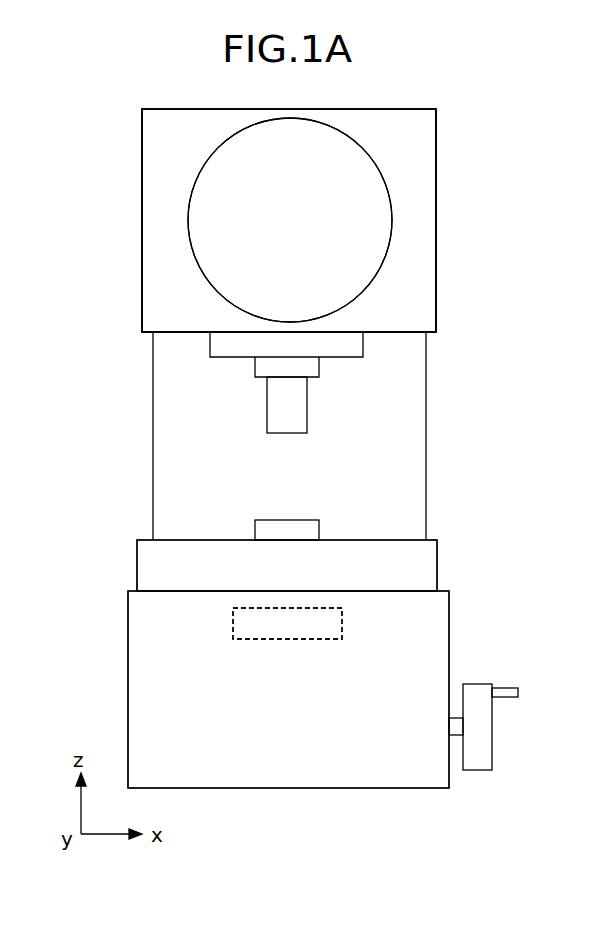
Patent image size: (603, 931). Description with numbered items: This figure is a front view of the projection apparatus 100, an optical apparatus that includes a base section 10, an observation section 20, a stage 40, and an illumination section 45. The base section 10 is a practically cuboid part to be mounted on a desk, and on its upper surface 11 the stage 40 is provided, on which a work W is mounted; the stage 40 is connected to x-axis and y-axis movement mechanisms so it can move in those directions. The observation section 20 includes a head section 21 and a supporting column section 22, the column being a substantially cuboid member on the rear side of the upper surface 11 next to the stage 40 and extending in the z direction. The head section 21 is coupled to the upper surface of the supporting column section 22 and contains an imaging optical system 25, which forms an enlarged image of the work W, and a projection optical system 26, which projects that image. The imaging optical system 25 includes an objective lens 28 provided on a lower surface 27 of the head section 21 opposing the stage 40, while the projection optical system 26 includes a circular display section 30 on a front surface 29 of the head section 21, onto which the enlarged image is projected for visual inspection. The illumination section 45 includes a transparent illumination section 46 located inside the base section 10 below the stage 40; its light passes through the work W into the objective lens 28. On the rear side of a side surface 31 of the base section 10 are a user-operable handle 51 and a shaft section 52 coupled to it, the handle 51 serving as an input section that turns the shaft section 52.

The projection apparatus 100 is at (363, 92).
The observation section 20 is at (437, 250).
The head section 21 is at (185, 125).
The front surface 29 is at (417, 213).
The display section 30 is at (205, 225).
The projection optical system 26 is at (386, 178).
The supporting column section 22 is at (405, 442).
The lower surface 27 is at (177, 333).
The objective lens 28 is at (265, 422).
The imaging optical system 25 is at (253, 403).
The work W is at (300, 520).
The stage 40 is at (437, 558).
The upper surface 11 is at (160, 590).
The base section 10 is at (283, 760).
The side surface 31 is at (448, 618).
The transparent illumination section 46 is at (233, 622).
The illumination section 45 is at (197, 630).
The handle 51 is at (483, 725).
The shaft section 52 is at (457, 735).